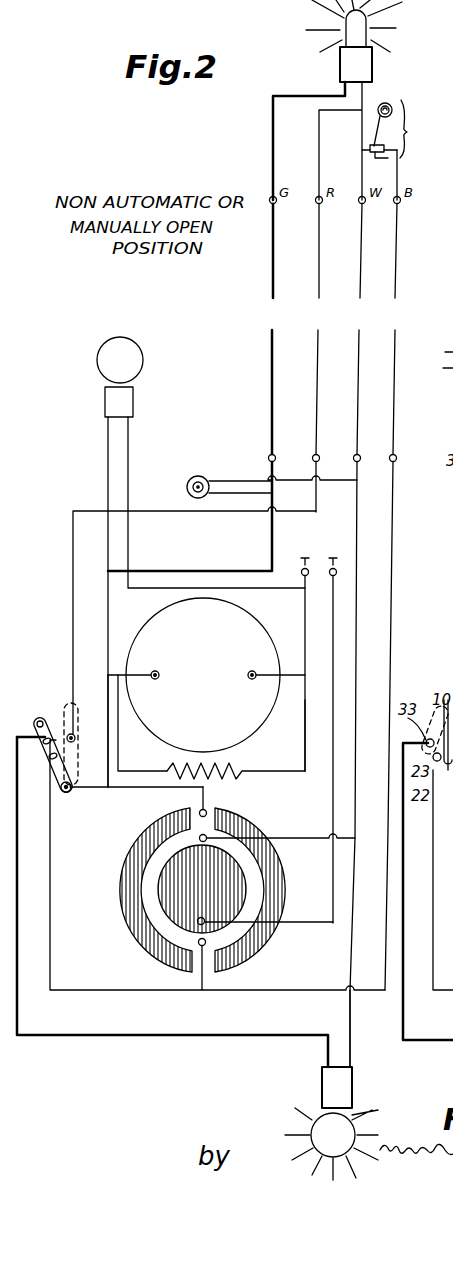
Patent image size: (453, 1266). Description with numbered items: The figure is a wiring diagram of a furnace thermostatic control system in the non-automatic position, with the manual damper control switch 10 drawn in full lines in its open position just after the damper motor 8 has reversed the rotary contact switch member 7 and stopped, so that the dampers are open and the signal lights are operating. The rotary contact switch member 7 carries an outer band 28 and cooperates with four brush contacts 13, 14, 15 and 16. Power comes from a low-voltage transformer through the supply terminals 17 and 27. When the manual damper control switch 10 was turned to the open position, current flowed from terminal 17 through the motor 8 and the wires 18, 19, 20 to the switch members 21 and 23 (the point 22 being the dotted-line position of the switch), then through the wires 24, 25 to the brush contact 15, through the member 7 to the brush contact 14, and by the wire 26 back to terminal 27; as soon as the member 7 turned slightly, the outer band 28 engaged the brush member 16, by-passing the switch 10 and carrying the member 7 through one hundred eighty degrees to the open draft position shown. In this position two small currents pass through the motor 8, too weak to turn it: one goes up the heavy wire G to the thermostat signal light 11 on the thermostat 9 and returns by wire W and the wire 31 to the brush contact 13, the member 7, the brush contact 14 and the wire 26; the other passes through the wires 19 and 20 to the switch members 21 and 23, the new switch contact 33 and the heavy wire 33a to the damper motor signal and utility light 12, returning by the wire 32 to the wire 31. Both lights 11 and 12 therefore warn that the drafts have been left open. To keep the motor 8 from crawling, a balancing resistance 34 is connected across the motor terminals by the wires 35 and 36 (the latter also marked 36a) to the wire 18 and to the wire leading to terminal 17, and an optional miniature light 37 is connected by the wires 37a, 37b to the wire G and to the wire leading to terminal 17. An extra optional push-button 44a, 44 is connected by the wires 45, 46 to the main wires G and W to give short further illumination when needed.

The rotary contact switch member 7 is at (284, 848).
The damper motor 8 is at (245, 630).
The thermostat 9 is at (393, 129).
The manual damper control switch 10 is at (38, 721).
The thermostat signal light 11 is at (393, 25).
The damper motor signal and utility light 12 is at (362, 1124).
The brush contact 13 is at (207, 835).
The brush contact 14 is at (207, 923).
The brush contact 15 is at (210, 942).
The brush member 16 is at (200, 811).
The transformer supply terminal 17 is at (301, 572).
The wire 18 is at (112, 672).
The wire 19 is at (108, 703).
The wire 20 is at (130, 790).
The switch member 21 is at (67, 793).
The switch point 22 is at (78, 768).
The switch contact 23 is at (48, 760).
The wire 24 is at (52, 878).
The wire 25 is at (200, 977).
The wire 26 is at (296, 908).
The transformer terminal 27 is at (337, 572).
The outer band 28 is at (225, 958).
The wire 31 is at (298, 837).
The wire 32 is at (352, 1022).
The switch contact 33 is at (62, 722).
The wire 33a is at (112, 1037).
The balancing resistance 34 is at (220, 767).
The wire 35 is at (118, 760).
The wire 36 is at (305, 728).
The conductor 36a is at (290, 633).
The miniature light 37 is at (140, 362).
The wire 37a is at (108, 462).
The wire 37b is at (128, 461).
The pivot 44 is at (199, 465).
The push-button 44a is at (206, 453).
The wire 45 is at (226, 480).
The wire 46 is at (244, 488).